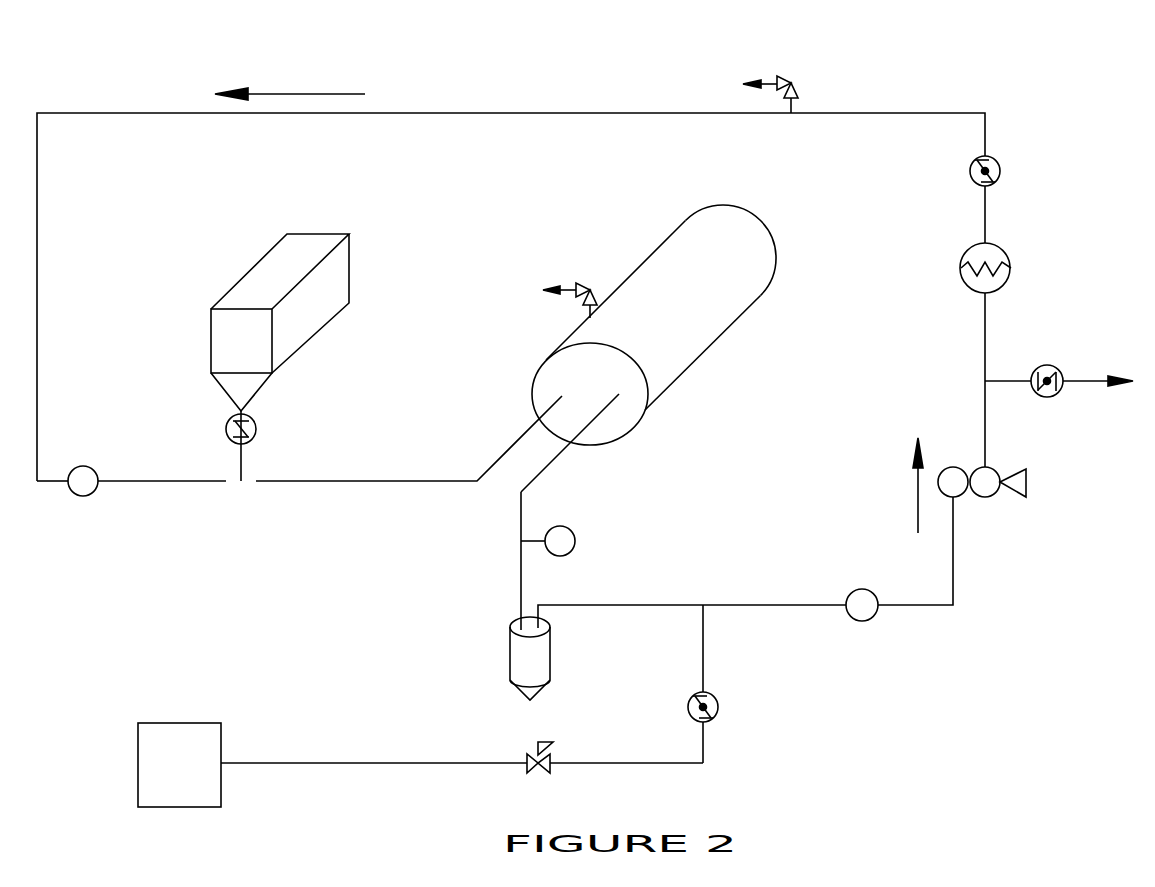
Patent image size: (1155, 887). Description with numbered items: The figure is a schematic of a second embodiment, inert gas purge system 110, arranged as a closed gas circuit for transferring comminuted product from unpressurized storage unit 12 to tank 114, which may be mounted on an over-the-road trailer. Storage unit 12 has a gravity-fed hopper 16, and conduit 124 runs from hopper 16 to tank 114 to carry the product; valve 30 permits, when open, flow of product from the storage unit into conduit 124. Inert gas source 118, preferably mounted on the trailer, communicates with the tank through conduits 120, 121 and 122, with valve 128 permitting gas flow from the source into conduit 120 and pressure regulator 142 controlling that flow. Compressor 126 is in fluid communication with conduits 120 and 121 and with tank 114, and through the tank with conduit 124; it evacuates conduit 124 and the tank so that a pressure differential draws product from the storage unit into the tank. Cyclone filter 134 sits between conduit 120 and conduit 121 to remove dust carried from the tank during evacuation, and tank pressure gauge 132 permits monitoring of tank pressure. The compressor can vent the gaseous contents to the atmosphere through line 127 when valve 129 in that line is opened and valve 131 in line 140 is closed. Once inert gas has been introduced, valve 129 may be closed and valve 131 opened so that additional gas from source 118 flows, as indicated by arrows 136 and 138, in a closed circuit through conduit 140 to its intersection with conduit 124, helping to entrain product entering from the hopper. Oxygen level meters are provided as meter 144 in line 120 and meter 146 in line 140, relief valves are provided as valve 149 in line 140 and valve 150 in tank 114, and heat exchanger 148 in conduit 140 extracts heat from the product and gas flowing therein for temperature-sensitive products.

The unpressurized storage unit 12 is at (318, 299).
The gravity-fed hopper 16 is at (223, 389).
The valve 30 is at (256, 422).
The inert gas purge system 110 is at (1036, 724).
The tank 114 is at (723, 318).
The inert gas source 118 is at (138, 774).
The conduit 120 is at (660, 605).
The conduit 121 is at (521, 576).
The conduit 122 is at (355, 763).
The conduit 124 is at (336, 481).
The compressor 126 is at (998, 458).
The line 127 is at (1010, 380).
The valve 128 is at (718, 700).
The valve 129 is at (1055, 366).
The valve 131 is at (992, 158).
The tank pressure gauge 132 is at (576, 541).
The cyclone filter 134 is at (550, 656).
The arrow 136 is at (918, 500).
The arrow 138 is at (293, 93).
The conduit 140 is at (487, 113).
The pressure regulator 142 is at (553, 750).
The oxygen level meter 144 is at (866, 620).
The oxygen level meter 146 is at (93, 467).
The heat exchanger 148 is at (1010, 257).
The relief valve 149 is at (780, 78).
The relief valve 150 is at (582, 283).